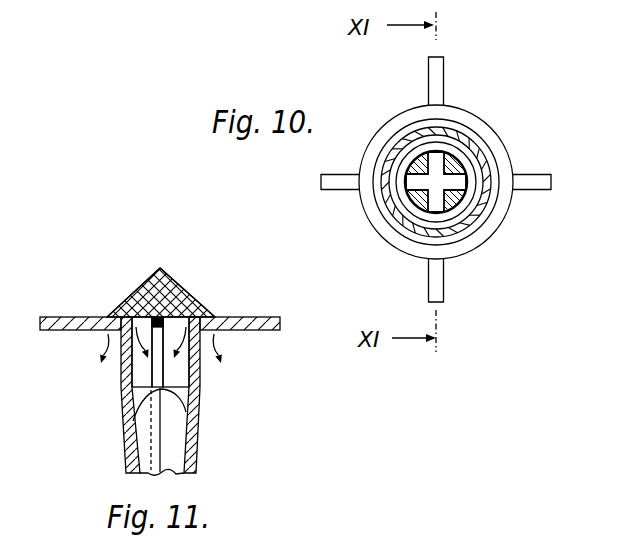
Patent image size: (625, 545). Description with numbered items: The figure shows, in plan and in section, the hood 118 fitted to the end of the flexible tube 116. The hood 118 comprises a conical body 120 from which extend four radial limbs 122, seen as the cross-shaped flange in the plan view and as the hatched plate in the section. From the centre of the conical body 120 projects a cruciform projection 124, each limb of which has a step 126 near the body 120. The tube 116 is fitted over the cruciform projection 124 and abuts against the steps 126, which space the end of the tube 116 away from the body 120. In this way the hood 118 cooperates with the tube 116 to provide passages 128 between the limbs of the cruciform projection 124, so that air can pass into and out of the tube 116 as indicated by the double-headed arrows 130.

In FIG. 10, the flexible tube 116 is at (458, 162).
In FIG. 11, the flexible tube 116 is at (198, 445).
In FIG. 10, the hood 118 is at (494, 245).
In FIG. 11, the hood 118 is at (216, 292).
In FIG. 10, the conical body 120 is at (468, 108).
In FIG. 11, the conical body 120 is at (163, 293).
In FIG. 10, the radial limbs 122 is at (427, 80).
In FIG. 11, the radial limbs 122 is at (56, 316).
In FIG. 10, the cruciform projection 124 is at (421, 197).
In FIG. 11, the cruciform projection 124 is at (134, 418).
In FIG. 11, the step 126 is at (176, 308).
In FIG. 10, the passages 128 is at (423, 191).
In FIG. 11, the passages 128 is at (140, 378).
In FIG. 11, the double-headed arrows 130 is at (110, 333).